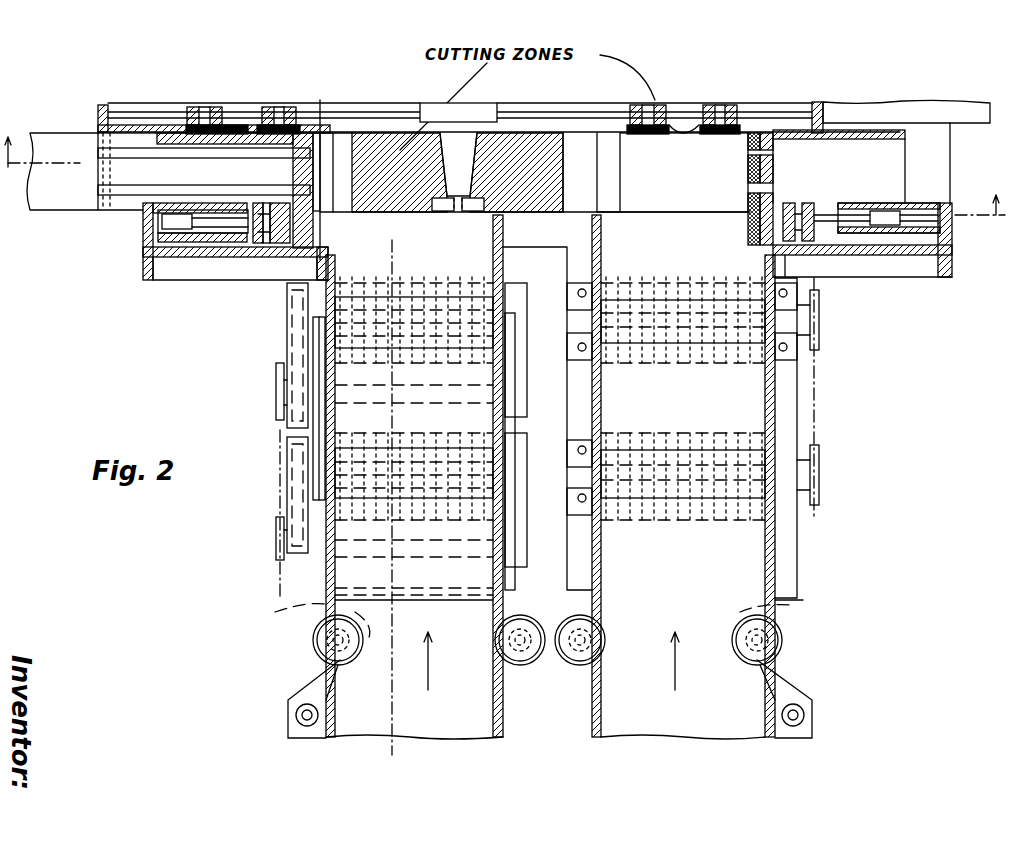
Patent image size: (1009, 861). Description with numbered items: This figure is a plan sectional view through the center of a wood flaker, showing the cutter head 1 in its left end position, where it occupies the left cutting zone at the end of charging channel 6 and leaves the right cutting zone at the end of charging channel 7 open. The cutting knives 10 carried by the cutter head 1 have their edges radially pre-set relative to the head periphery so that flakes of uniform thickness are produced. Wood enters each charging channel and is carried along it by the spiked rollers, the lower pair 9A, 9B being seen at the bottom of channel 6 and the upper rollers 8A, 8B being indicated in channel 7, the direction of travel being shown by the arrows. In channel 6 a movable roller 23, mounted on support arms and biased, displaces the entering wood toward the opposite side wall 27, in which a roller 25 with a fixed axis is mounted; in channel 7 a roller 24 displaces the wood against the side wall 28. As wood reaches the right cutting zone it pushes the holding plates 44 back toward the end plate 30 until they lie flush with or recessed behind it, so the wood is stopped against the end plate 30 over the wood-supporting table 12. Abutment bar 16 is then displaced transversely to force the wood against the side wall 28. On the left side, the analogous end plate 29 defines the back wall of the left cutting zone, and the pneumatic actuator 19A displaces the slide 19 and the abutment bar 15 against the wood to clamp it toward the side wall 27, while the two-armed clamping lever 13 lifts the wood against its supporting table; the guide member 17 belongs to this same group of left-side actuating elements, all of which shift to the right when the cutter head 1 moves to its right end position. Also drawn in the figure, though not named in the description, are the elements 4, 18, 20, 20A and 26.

The cutter head 1 is at (514, 130).
The strip / belt 4 is at (390, 237).
The charging channel 6 is at (330, 620).
The charging channel 7 is at (775, 560).
The spiked roller 8A is at (750, 345).
The spiked roller 8B is at (750, 440).
The spiked roller 9A is at (365, 330).
The spiked roller 9B is at (370, 475).
The cutting knife 10 is at (330, 170).
The wood-supporting table 12 is at (700, 190).
The two-armed clamping lever 13 is at (158, 190).
The abutment bar 15 is at (300, 140).
The abutment bar 16 is at (768, 140).
The guide member 17 is at (185, 258).
The housing 18 is at (925, 255).
The slide 19 is at (248, 255).
The pneumatic actuator 19A is at (220, 221).
The cylinder 20 is at (848, 255).
The piston 20A is at (893, 183).
The roller 23 is at (320, 645).
The roller 24 is at (770, 638).
The roller 25 is at (525, 630).
The roller 26 is at (572, 658).
The side wall 27 is at (503, 262).
The side wall 28 is at (592, 232).
The end plate 29 is at (247, 130).
The end plate 30 is at (645, 162).
The holding plates 44 is at (190, 128).